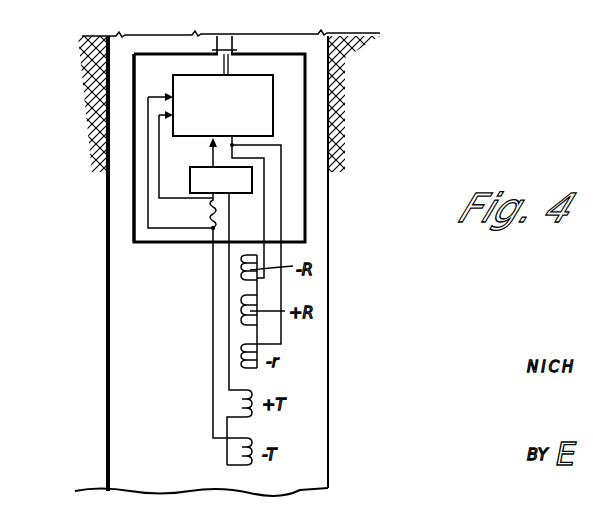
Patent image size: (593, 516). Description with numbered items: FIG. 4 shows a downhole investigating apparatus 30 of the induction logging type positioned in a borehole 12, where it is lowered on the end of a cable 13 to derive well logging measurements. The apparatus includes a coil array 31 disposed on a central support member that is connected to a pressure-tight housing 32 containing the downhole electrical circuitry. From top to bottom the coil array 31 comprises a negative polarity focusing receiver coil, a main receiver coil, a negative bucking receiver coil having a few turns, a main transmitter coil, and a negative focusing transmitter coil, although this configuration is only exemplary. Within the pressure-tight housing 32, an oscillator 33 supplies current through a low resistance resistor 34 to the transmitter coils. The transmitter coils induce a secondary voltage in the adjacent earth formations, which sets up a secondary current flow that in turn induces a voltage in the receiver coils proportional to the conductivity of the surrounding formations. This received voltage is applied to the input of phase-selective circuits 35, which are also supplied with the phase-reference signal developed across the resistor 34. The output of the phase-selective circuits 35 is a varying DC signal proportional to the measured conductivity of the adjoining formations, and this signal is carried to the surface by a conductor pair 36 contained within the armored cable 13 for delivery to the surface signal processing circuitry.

The borehole 12 is at (329, 92).
The cable 13 is at (238, 47).
The downhole investigating apparatus 30 is at (125, 158).
The coil array 31 is at (198, 356).
The pressure-tight housing 32 is at (133, 117).
The oscillator 33 is at (190, 176).
The low resistance resistor 34 is at (206, 208).
The phase-selective circuits 35 is at (275, 86).
The conductor pair 36 is at (223, 64).